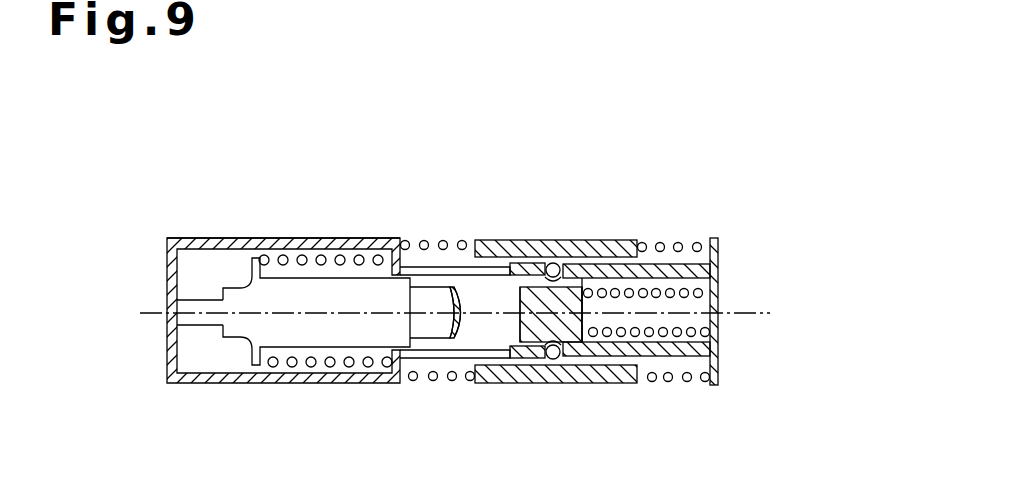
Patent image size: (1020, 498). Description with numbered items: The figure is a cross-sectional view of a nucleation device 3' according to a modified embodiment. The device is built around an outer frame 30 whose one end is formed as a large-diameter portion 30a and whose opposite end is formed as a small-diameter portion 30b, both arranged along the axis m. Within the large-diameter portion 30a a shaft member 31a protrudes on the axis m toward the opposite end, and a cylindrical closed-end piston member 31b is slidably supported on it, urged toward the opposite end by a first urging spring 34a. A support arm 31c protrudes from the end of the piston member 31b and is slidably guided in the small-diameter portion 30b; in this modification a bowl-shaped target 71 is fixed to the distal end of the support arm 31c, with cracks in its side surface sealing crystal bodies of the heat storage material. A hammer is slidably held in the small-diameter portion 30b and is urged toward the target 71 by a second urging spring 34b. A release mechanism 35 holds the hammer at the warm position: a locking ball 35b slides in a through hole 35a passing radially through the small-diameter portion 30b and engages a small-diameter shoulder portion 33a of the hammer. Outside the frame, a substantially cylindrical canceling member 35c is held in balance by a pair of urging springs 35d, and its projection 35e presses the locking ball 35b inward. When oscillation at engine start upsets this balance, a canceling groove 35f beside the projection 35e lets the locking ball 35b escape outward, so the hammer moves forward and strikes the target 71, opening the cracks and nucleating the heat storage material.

The nucleation device 3' is at (467, 284).
The outer frame 30 is at (239, 233).
The large-diameter portion 30a is at (340, 239).
The small-diameter portion 30b is at (688, 262).
The shaft member 31a is at (198, 326).
The piston member 31b is at (303, 346).
The support arm 31c is at (438, 287).
The shoulder portion 33a is at (560, 258).
The first urging spring 34a is at (300, 256).
The second urging spring 34b is at (717, 282).
The release mechanism 35 is at (598, 316).
The through hole 35a is at (552, 263).
The locking ball 35b is at (556, 279).
The canceling member 35c is at (510, 240).
The urging springs 35d is at (404, 240).
The projection 35e is at (578, 358).
The canceling groove 35f is at (622, 383).
The bowl-shaped target 71 is at (464, 302).
The axis m is at (734, 313).